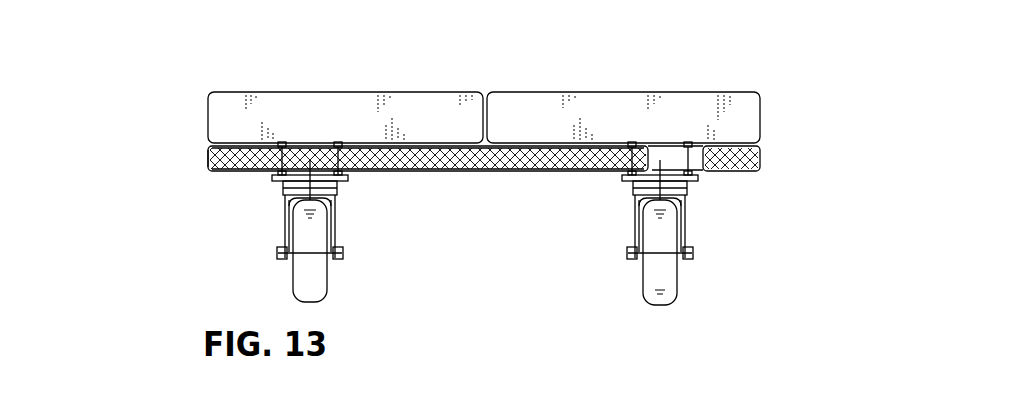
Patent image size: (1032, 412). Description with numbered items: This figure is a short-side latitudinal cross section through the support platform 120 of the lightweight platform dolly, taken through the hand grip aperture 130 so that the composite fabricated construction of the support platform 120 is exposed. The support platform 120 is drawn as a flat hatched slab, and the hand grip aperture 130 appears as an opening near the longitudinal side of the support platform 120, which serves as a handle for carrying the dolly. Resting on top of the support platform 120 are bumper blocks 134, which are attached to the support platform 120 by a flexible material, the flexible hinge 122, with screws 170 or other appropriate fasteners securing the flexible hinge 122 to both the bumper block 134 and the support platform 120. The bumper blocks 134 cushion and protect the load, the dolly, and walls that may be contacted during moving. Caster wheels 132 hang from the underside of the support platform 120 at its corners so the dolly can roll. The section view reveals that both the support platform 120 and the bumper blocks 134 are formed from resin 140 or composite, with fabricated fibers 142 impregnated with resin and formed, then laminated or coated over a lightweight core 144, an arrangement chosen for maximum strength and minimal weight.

The support platform 120 is at (424, 76).
The flexible hinge 122 is at (207, 143).
The hand grip aperture 130 is at (675, 143).
The caster wheels 132 is at (283, 250).
The bumper blocks 134 is at (727, 33).
The resin 140 is at (428, 210).
The fabricated fibers 142 is at (480, 172).
The lightweight core 144 is at (497, 172).
The screws 170 is at (285, 176).